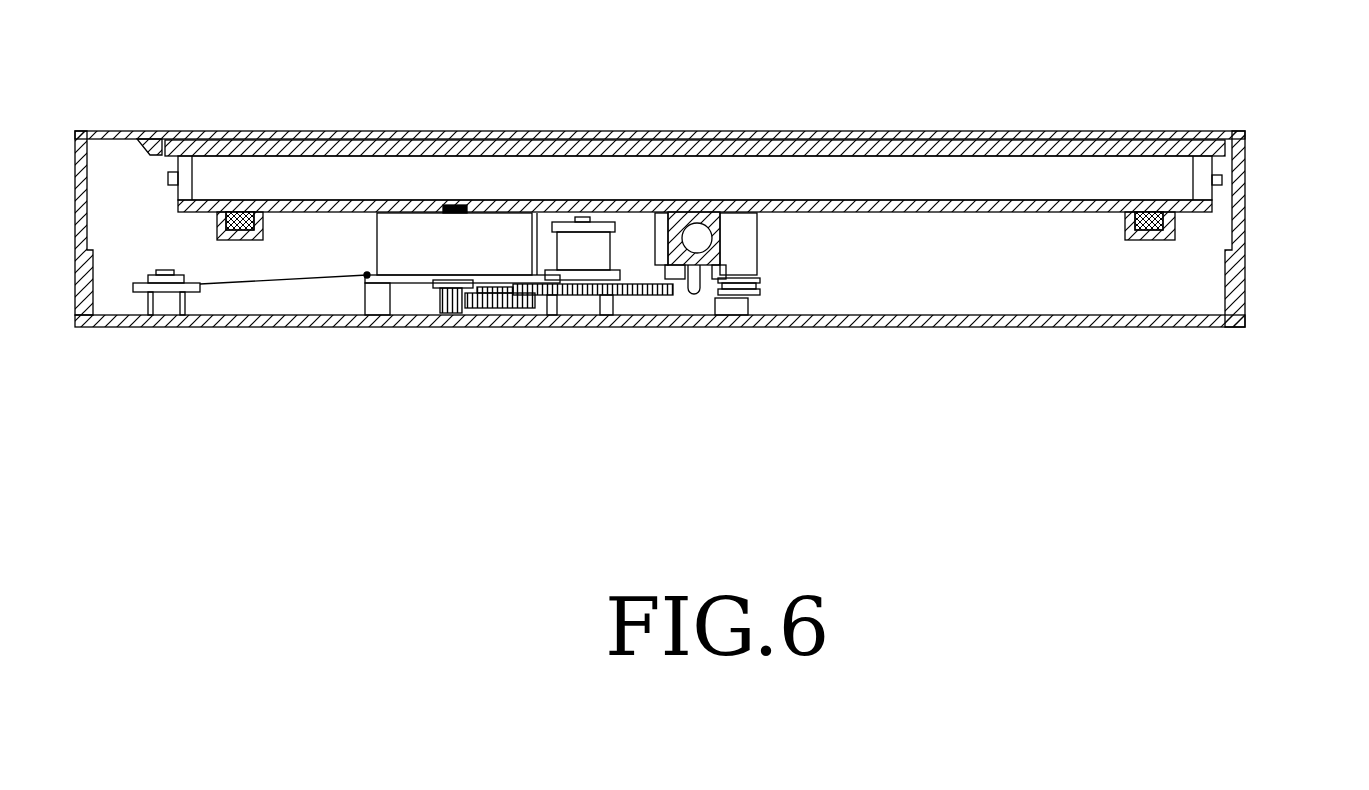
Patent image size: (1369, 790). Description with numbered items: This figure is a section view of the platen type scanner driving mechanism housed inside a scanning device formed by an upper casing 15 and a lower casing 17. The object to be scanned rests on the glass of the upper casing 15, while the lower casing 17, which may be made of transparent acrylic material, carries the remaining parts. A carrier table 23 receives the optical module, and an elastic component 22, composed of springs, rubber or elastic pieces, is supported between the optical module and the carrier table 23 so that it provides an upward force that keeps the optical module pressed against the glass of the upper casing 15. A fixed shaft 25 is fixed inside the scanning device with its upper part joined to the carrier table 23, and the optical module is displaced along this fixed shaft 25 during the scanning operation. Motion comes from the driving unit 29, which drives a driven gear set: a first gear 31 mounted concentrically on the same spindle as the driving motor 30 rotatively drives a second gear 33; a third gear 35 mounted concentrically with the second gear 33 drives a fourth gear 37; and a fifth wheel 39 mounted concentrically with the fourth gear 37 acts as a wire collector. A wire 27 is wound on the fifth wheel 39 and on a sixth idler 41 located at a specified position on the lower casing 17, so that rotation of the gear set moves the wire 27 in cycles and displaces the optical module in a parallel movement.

The upper casing 15 is at (1097, 135).
The lower casing 17 is at (1240, 310).
The elastic component 22 is at (237, 200).
The carrier table 23 is at (561, 200).
The fixed shaft 25 is at (695, 238).
The wire 27 is at (268, 284).
The driving unit 29 is at (363, 227).
The driving motor 30 is at (435, 225).
The first gear 31 is at (450, 306).
The second gear 33 is at (527, 306).
The third gear 35 is at (503, 275).
The fourth gear 37 is at (620, 286).
The fifth wheel 39 is at (594, 260).
The sixth idler 41 is at (166, 293).